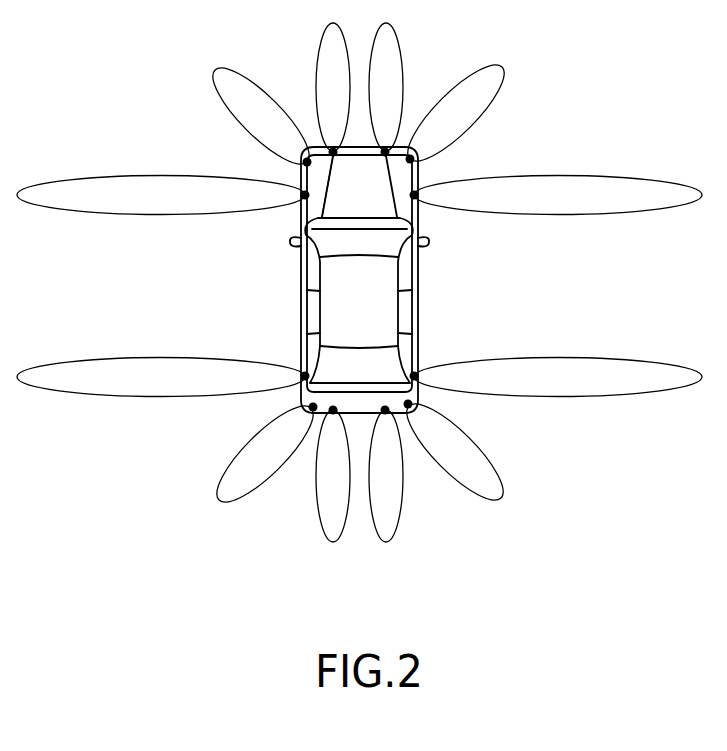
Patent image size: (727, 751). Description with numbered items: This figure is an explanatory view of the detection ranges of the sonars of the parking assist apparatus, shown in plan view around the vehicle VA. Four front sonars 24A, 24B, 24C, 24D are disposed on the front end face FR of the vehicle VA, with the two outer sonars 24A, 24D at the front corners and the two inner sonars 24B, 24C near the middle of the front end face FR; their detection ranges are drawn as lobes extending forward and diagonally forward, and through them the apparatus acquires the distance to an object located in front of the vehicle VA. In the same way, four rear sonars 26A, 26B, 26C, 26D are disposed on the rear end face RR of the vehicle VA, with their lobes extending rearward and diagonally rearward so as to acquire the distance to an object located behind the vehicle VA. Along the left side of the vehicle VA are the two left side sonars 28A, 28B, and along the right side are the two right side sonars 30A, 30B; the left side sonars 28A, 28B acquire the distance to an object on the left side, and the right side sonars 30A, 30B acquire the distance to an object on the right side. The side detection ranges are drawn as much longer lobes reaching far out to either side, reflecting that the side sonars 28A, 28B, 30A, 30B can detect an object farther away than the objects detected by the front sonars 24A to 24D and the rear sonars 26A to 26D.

The vehicle VA is at (419, 290).
The front end face FR is at (360, 160).
The rear end face RR is at (357, 417).
The front sonar 24A is at (307, 162).
The front sonar 24B is at (333, 150).
The front sonar 24C is at (385, 150).
The front sonar 24D is at (410, 159).
The rear sonar 26A is at (313, 407).
The rear sonar 26B is at (333, 410).
The rear sonar 26C is at (385, 410).
The rear sonar 26D is at (408, 404).
The left side sonar 28A is at (305, 195).
The left side sonar 28B is at (305, 376).
The right side sonar 30A is at (414, 195).
The right side sonar 30B is at (414, 376).